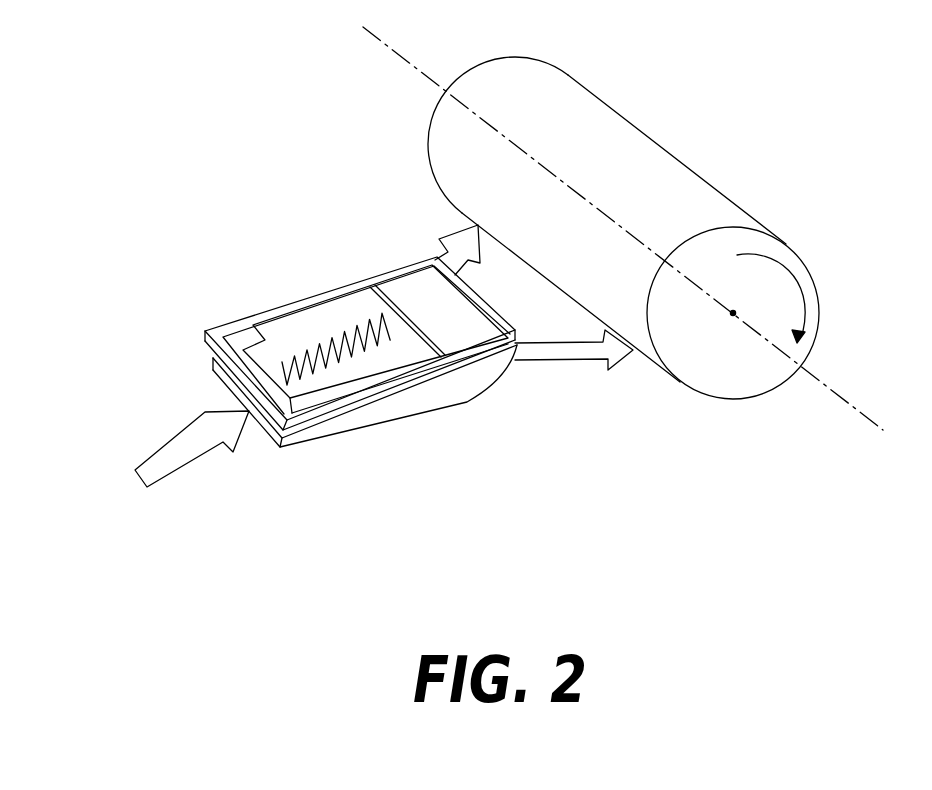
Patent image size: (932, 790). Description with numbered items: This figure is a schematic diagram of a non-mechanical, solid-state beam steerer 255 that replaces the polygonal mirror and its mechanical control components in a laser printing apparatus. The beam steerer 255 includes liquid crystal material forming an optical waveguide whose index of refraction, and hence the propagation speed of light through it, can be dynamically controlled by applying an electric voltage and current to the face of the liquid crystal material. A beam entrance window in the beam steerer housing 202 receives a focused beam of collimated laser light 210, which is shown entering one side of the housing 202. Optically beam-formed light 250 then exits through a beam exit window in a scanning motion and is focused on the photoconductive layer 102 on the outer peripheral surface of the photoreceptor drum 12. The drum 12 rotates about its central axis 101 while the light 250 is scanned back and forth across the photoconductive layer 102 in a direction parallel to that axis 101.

The photoreceptor drum 12 is at (716, 396).
The central axis 101 is at (845, 402).
The photoconductive layer 102 is at (817, 300).
The beam steerer housing 202 is at (308, 448).
The laser output beam 210 is at (143, 483).
The beam-formed light 250 is at (553, 360).
The beam steerer 255 is at (398, 451).